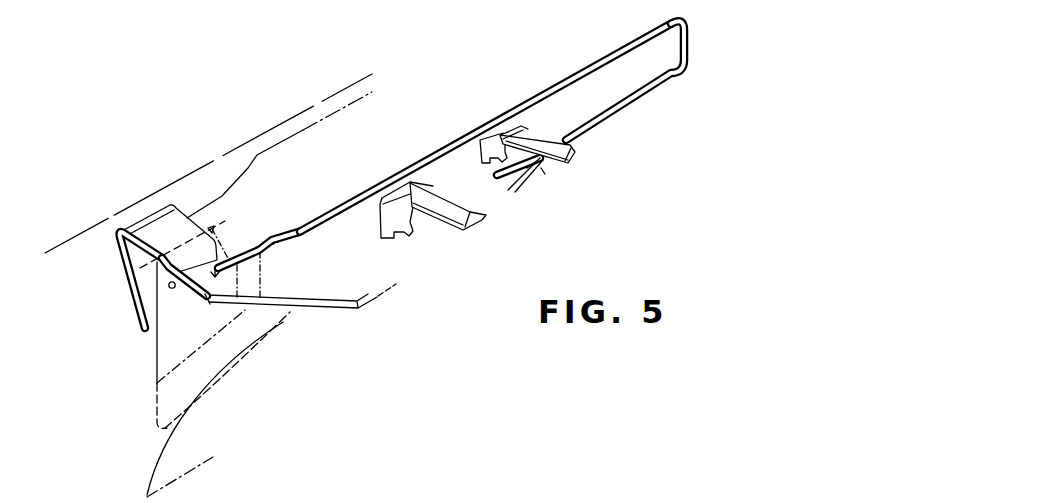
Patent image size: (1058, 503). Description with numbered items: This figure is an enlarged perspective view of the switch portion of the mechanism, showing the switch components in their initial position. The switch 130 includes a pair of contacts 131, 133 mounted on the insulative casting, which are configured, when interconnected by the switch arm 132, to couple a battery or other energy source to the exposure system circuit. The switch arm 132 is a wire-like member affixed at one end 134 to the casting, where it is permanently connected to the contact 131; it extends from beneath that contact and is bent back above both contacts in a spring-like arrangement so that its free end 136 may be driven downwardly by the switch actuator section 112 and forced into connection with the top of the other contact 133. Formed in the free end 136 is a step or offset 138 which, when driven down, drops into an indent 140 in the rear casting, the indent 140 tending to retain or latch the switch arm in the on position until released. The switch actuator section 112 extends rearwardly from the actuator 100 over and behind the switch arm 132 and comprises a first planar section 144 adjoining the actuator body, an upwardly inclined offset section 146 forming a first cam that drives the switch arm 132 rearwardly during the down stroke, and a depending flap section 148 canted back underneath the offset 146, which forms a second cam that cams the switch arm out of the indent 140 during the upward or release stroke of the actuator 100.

The actuator 100 is at (310, 310).
The switch actuator section 112 is at (165, 279).
The switch 130 is at (451, 144).
The contact 131 is at (572, 158).
The switch arm 132 is at (392, 180).
The contact 133 is at (448, 228).
The end of switch arm 134 is at (513, 193).
The free end of switch arm 136 is at (173, 290).
The step or offset 138 is at (251, 236).
The indent 140 is at (243, 299).
The first planar section 144 is at (216, 300).
The offset section 146 is at (143, 254).
The flap section 148 is at (134, 302).